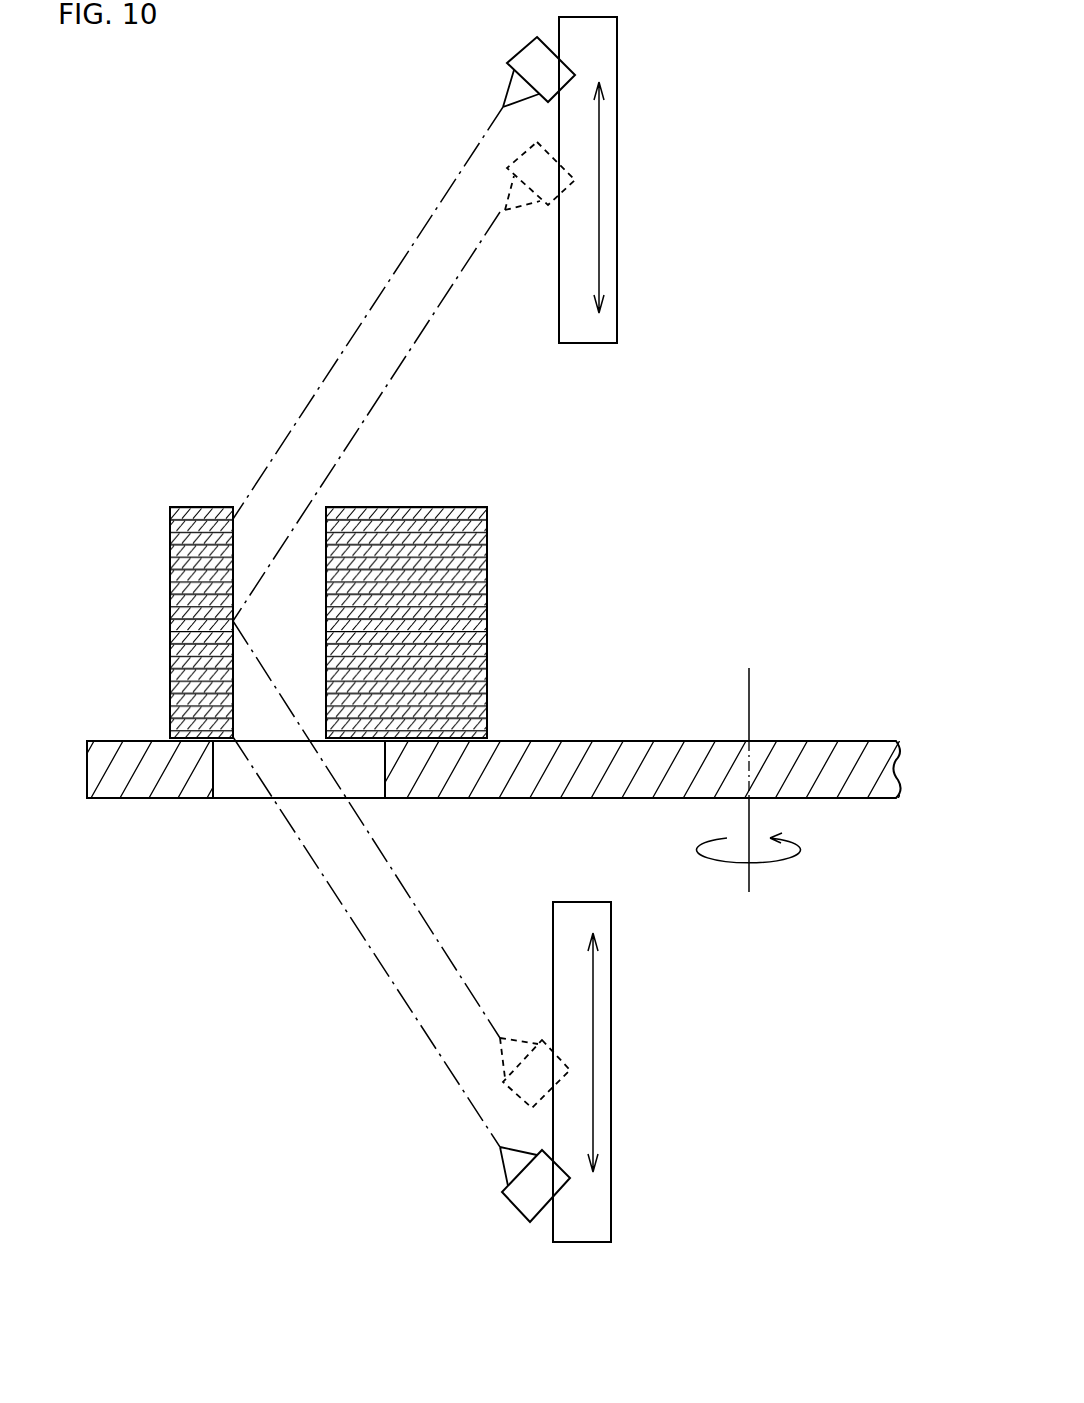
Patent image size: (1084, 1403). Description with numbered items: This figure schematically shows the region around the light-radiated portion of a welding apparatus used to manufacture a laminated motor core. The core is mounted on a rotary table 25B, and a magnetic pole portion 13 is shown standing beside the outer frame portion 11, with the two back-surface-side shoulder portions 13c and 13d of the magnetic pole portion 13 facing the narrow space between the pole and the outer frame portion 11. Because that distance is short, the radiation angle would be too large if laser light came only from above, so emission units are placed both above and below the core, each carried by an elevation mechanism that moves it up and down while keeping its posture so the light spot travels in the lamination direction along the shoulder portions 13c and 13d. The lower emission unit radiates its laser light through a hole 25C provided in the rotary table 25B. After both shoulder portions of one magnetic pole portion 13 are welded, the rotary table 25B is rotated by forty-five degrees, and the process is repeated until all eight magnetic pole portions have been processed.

The outer frame portion 11 is at (460, 507).
The magnetic pole portion 13 is at (185, 507).
The back-surface-side shoulder portion 13c is at (233, 556).
The back-surface-side shoulder portion 13d is at (248, 565).
The rotary table 25B is at (555, 787).
The hole 25C is at (243, 787).